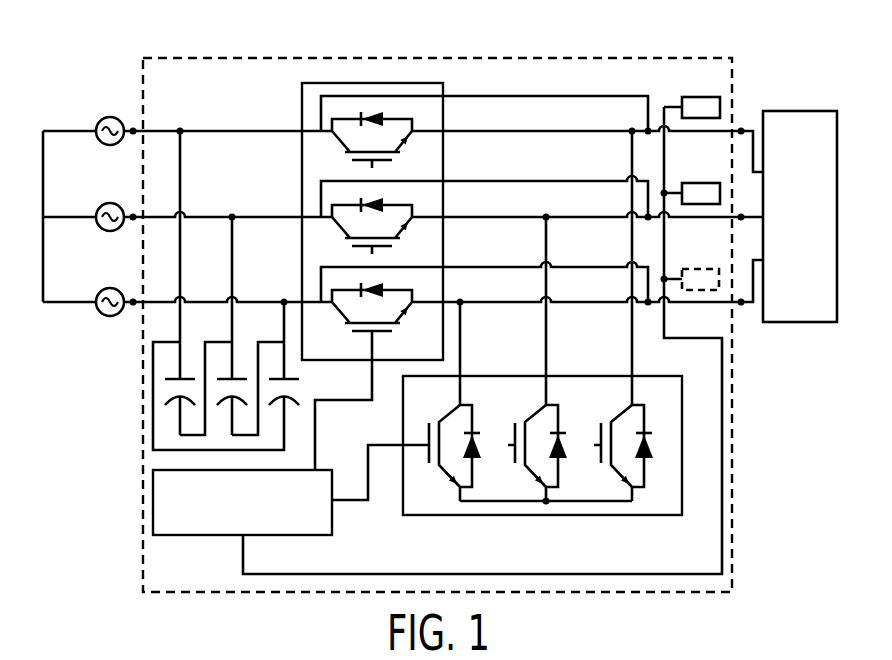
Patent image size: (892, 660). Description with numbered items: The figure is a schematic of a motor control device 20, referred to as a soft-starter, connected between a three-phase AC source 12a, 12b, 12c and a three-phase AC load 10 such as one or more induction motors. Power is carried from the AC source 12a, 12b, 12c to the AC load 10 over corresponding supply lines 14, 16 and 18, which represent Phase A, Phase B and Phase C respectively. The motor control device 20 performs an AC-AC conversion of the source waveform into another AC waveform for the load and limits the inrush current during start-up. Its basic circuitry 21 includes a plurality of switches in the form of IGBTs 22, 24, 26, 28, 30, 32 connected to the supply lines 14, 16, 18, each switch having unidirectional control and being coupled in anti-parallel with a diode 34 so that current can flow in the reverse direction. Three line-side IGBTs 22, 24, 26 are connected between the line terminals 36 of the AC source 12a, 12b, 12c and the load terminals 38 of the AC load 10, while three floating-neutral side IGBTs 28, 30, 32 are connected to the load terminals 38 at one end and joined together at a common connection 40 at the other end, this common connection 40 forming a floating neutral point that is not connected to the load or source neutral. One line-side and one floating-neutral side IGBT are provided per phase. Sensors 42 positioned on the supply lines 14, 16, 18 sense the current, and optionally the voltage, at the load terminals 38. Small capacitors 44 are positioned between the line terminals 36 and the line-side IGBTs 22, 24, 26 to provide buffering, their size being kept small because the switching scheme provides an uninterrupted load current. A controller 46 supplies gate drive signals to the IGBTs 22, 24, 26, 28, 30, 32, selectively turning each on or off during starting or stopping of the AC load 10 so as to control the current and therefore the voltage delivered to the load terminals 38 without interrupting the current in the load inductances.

The AC load 10 is at (800, 111).
The AC source 12a is at (98, 124).
The AC source 12b is at (98, 210).
The AC source 12c is at (98, 295).
The supply line 14 is at (572, 131).
The supply line 16 is at (572, 217).
The supply line 18 is at (572, 302).
The motor control device 20 is at (560, 37).
The circuitry 21 is at (238, 104).
The line-side IGBT 22 is at (345, 153).
The line-side IGBT 24 is at (345, 239).
The line-side IGBT 26 is at (347, 332).
The floating-neutral side IGBT 28 is at (602, 423).
The floating-neutral side IGBT 30 is at (516, 423).
The floating-neutral side IGBT 32 is at (431, 422).
The diode 34 is at (360, 113).
The line terminals 36 is at (133, 129).
The load terminals 38 is at (743, 129).
The common connection 40 is at (470, 503).
The sensors 42 is at (689, 96).
The capacitors 44 is at (165, 416).
The controller 46 is at (203, 536).